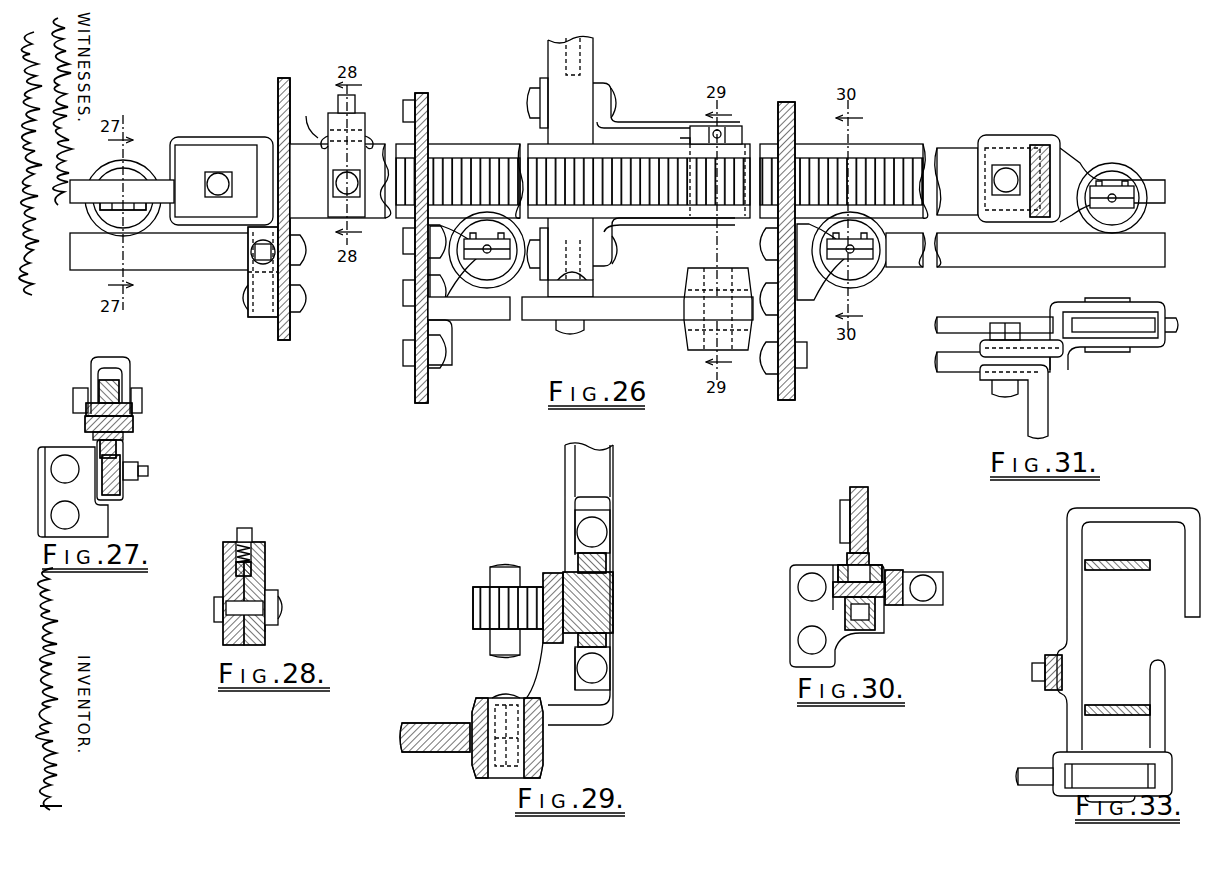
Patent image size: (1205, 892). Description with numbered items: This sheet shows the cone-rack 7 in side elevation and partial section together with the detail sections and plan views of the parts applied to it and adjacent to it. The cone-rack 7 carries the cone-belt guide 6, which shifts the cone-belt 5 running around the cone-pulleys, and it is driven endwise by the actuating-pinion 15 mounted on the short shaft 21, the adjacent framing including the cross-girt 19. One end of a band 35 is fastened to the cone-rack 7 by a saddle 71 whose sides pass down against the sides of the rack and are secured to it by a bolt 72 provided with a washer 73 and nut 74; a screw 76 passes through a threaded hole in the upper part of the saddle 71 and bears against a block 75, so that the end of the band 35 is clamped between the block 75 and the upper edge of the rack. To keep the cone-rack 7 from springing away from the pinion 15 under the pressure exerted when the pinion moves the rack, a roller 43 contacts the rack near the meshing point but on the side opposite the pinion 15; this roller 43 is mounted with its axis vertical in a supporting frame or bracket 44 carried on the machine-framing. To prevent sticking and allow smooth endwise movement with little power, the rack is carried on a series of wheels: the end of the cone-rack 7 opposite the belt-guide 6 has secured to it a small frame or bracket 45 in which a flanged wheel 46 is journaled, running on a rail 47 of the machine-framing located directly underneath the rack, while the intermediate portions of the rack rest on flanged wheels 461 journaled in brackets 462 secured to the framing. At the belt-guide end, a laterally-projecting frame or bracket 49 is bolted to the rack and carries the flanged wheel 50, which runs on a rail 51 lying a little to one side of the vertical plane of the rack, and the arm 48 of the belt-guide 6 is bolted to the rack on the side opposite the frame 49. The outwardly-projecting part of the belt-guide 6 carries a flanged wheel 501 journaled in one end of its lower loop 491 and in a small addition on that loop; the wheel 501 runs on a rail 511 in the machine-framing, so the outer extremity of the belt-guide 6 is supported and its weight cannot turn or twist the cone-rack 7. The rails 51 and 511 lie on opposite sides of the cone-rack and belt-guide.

In FIG. 33, the cone-belt 5 is at (1104, 560).
In FIG. 33, the cone-belt guide 6 is at (1050, 660).
In FIG. 26, the cone-rack 7 is at (484, 160).
In FIG. 30, the cone-rack 7 is at (850, 492).
In FIG. 29, the actuating-pinion 15 is at (472, 602).
In FIG. 26, the cross-girt 19 is at (637, 315).
In FIG. 29, the cross-girt 19 is at (408, 726).
In FIG. 26, the short shaft 21 is at (718, 309).
In FIG. 29, the short shaft 21 is at (500, 580).
In FIG. 26, the band 35 is at (374, 142).
In FIG. 28, the band 35 is at (254, 573).
In FIG. 26, the roller 43 is at (742, 132).
In FIG. 29, the roller 43 is at (616, 598).
In FIG. 26, the supporting frame or bracket 44 is at (606, 98).
In FIG. 29, the supporting frame or bracket 44 is at (602, 550).
In FIG. 26, the frame or bracket 45 is at (200, 142).
In FIG. 27, the frame or bracket 45 is at (132, 362).
In FIG. 26, the flanged wheel 46 is at (122, 170).
In FIG. 27, the flanged wheel 46 is at (110, 384).
In FIG. 26, the rail 47 is at (165, 251).
In FIG. 27, the rail 47 is at (113, 490).
In FIG. 31, the arm of the belt-guide 48 is at (1040, 414).
In FIG. 26, the laterally-projecting frame or bracket 49 is at (1064, 152).
In FIG. 31, the laterally-projecting frame or bracket 49 is at (1058, 306).
In FIG. 26, the flanged wheel 50 is at (1104, 168).
In FIG. 31, the flanged wheel 50 is at (1130, 322).
In FIG. 26, the rail 51 is at (1025, 250).
In FIG. 31, the rail 51 is at (957, 325).
In FIG. 26, the saddle 71 is at (362, 120).
In FIG. 28, the saddle 71 is at (222, 589).
In FIG. 26, the bolt 72 is at (340, 183).
In FIG. 28, the bolt 72 is at (221, 610).
In FIG. 28, the washer 73 is at (270, 630).
In FIG. 28, the nut 74 is at (276, 600).
In FIG. 26, the block 75 is at (322, 140).
In FIG. 28, the block 75 is at (254, 561).
In FIG. 26, the screw 76 is at (352, 96).
In FIG. 28, the screw 76 is at (245, 528).
In FIG. 26, the flanged wheels 461 is at (486, 288).
In FIG. 30, the flanged wheels 461 is at (860, 624).
In FIG. 26, the brackets 462 is at (469, 295).
In FIG. 30, the brackets 462 is at (802, 614).
In FIG. 33, the lower loop of the belt-guide 491 is at (1084, 618).
In FIG. 33, the flanged wheel 501 is at (1126, 786).
In FIG. 30, the rail 511 is at (895, 574).
In FIG. 33, the rail 511 is at (1029, 768).